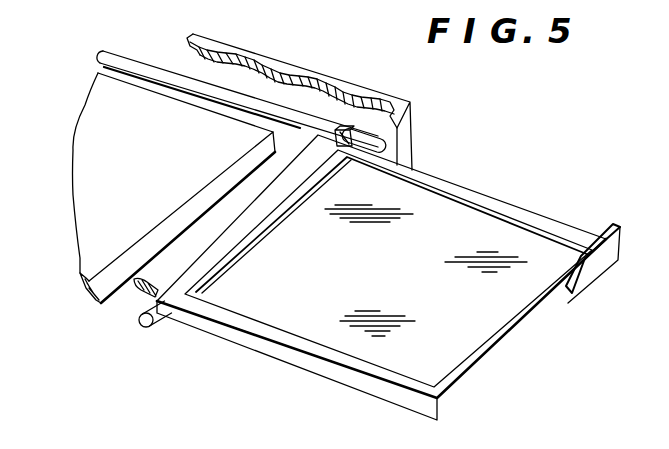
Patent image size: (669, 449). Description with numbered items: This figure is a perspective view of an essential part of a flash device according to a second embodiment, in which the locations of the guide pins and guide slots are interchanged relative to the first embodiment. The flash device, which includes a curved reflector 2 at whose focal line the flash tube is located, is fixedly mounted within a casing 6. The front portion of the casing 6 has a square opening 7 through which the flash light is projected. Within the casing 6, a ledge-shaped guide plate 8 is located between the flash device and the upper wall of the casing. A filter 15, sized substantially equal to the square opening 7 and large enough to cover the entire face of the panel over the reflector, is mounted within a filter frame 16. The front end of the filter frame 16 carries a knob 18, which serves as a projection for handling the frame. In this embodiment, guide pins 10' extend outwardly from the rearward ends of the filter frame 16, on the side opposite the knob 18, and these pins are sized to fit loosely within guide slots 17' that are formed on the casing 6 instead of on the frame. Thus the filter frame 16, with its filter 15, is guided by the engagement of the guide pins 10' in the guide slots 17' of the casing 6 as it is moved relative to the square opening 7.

The curved reflector 2 is at (160, 272).
The casing 6 is at (372, 100).
The square opening 7 is at (398, 142).
The guide plate 8 is at (95, 158).
The guide pins 10' is at (248, 206).
The filter 15 is at (405, 358).
The filter frame 16 is at (538, 322).
The guide slots 17' is at (237, 84).
The knob 18 is at (602, 236).